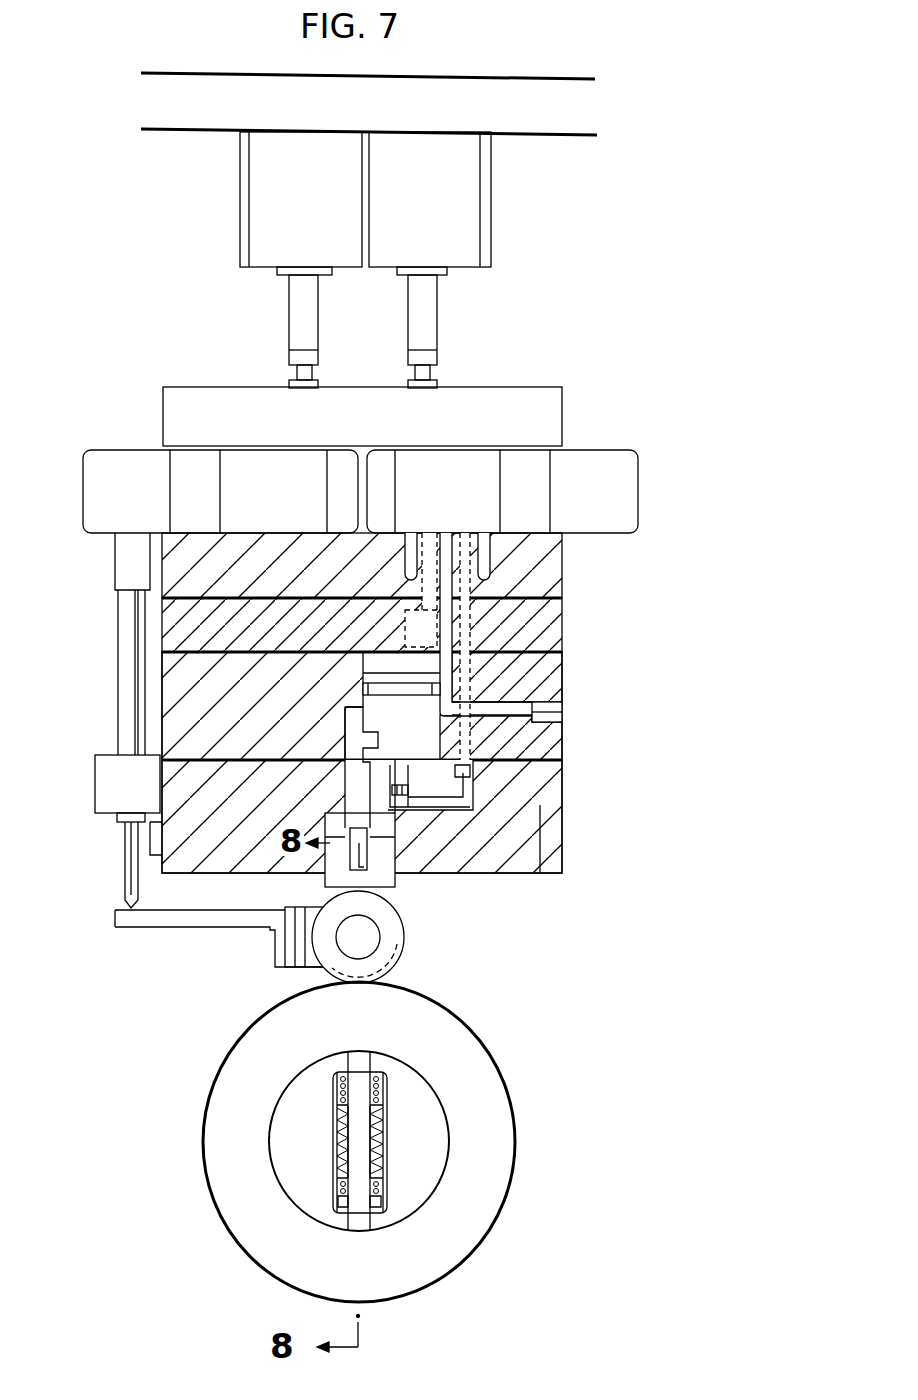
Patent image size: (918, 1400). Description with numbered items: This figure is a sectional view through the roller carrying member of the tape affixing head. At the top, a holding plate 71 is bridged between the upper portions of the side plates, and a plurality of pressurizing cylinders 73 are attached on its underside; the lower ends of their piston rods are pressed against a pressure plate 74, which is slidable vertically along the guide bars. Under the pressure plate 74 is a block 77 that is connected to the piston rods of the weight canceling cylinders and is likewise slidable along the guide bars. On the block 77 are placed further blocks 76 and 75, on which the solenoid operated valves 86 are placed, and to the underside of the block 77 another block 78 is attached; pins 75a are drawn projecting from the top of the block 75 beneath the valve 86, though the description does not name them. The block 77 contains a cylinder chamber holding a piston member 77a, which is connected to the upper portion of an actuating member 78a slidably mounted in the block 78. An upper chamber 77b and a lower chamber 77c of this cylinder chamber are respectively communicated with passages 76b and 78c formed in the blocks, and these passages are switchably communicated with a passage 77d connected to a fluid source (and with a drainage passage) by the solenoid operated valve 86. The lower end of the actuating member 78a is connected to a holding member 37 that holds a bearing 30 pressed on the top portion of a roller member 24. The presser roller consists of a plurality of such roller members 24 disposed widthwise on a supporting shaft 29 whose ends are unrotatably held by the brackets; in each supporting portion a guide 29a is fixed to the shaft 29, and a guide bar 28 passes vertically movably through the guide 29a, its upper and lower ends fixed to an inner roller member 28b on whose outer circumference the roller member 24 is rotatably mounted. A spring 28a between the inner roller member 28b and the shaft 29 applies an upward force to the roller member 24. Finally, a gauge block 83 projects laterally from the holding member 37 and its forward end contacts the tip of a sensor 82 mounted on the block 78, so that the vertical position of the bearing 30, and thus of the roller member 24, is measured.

The holding plate 71 is at (558, 122).
The pressurizing cylinders 73 is at (270, 222).
The pressure plate 74 is at (547, 423).
The solenoid operated valve 86 is at (117, 468).
The guide pins 75a is at (410, 533).
The block 75 is at (563, 588).
The block 76 is at (563, 640).
The passage 76b is at (386, 571).
The upper chamber 77b is at (398, 626).
The piston member 77a is at (364, 677).
The block 77 is at (563, 677).
The passage 77d is at (500, 715).
The lower chamber 77c is at (402, 807).
The actuating member 78a is at (357, 798).
The block 78 is at (563, 793).
The passage 78c is at (562, 830).
The sensor 82 is at (130, 700).
The gauge block 83 is at (115, 918).
The holding member 37 is at (385, 892).
The bearing 30 is at (406, 935).
The roller member 24 is at (457, 1252).
The inner roller member 28b is at (428, 1163).
The supporting shaft 29 is at (385, 1127).
The spring 28a is at (383, 1075).
The guide 29a is at (387, 1143).
The guide bar 28 is at (360, 1200).